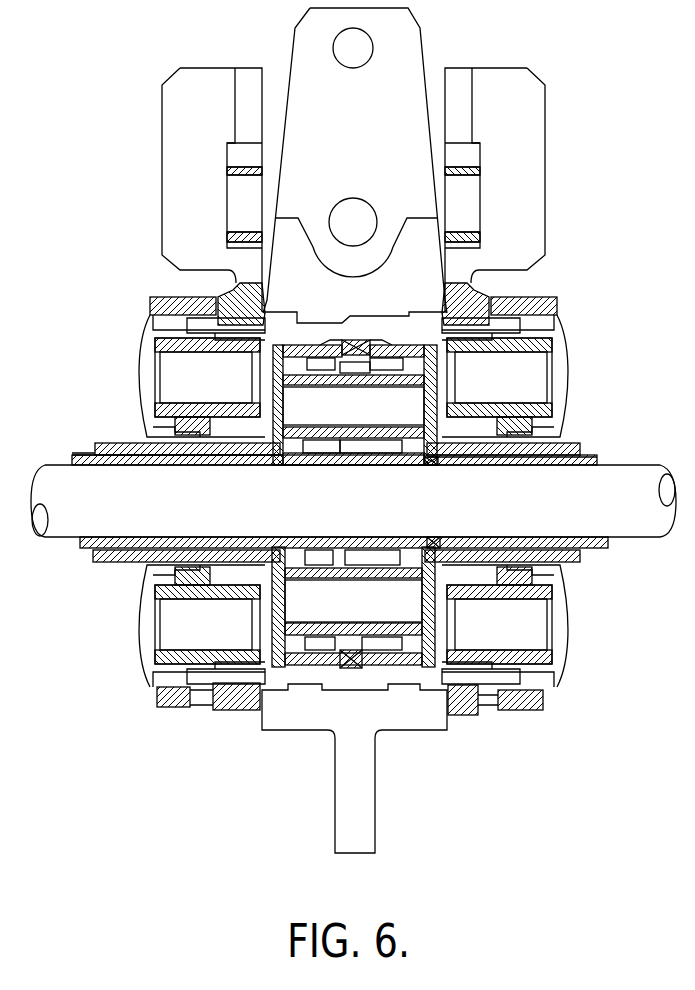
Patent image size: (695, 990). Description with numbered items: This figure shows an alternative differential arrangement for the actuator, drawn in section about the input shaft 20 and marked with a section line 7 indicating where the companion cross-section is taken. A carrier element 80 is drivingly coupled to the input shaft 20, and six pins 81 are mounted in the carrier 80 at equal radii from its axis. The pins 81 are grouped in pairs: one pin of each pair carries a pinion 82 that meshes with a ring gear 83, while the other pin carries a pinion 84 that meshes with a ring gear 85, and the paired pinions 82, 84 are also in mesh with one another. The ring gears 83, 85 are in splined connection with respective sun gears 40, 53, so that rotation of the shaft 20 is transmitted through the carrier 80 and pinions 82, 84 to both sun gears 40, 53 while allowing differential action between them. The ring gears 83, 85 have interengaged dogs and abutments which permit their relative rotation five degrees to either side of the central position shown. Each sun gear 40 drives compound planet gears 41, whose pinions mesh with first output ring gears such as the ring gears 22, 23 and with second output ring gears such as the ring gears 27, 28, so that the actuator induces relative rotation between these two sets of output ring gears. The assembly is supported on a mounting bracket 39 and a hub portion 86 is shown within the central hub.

The section line 7- 7 is at (359, 333).
The input shaft 20 is at (638, 492).
The first output ring gear 22 is at (170, 692).
The first output ring gear 23 is at (528, 705).
The second output ring gear 27 is at (240, 697).
The second output ring gear 28 is at (463, 702).
The mounting bracket 39 is at (389, 672).
The sun gear 40 is at (560, 560).
The compound planet gear 41 is at (530, 382).
The sun gear 53 is at (112, 560).
The carrier element 80 is at (290, 452).
The pin 81 is at (355, 389).
The pinion 82 is at (388, 450).
The ring gear 83 is at (396, 348).
The pinion 84 is at (323, 560).
The ring gear 85 is at (315, 348).
The hub insert 86 is at (355, 370).